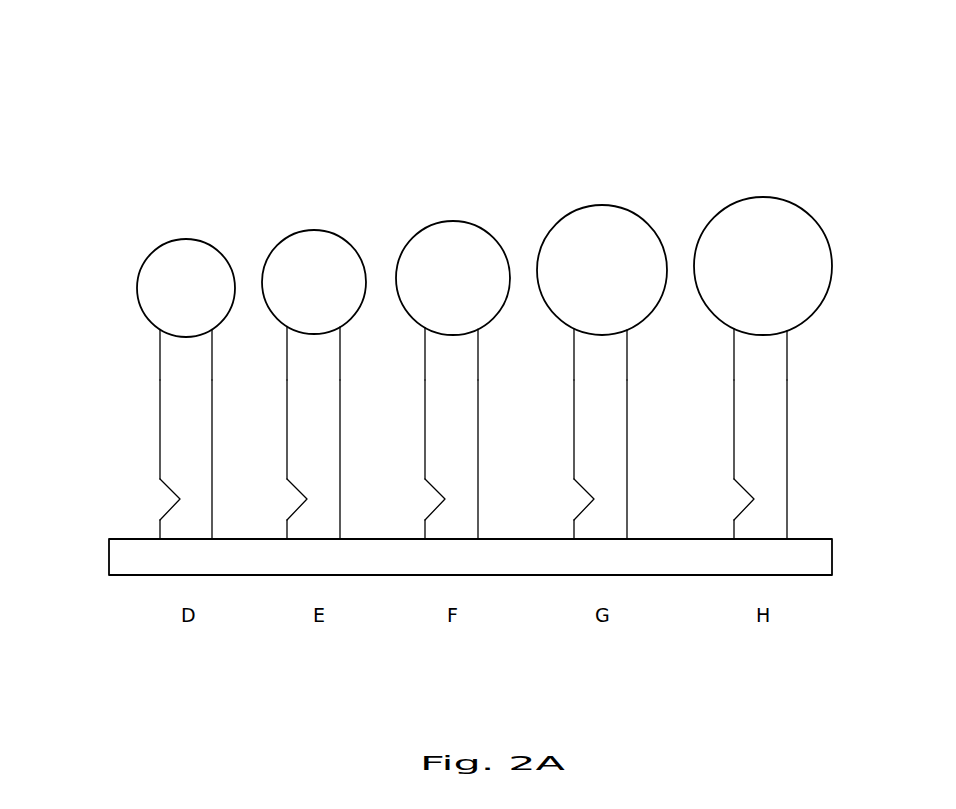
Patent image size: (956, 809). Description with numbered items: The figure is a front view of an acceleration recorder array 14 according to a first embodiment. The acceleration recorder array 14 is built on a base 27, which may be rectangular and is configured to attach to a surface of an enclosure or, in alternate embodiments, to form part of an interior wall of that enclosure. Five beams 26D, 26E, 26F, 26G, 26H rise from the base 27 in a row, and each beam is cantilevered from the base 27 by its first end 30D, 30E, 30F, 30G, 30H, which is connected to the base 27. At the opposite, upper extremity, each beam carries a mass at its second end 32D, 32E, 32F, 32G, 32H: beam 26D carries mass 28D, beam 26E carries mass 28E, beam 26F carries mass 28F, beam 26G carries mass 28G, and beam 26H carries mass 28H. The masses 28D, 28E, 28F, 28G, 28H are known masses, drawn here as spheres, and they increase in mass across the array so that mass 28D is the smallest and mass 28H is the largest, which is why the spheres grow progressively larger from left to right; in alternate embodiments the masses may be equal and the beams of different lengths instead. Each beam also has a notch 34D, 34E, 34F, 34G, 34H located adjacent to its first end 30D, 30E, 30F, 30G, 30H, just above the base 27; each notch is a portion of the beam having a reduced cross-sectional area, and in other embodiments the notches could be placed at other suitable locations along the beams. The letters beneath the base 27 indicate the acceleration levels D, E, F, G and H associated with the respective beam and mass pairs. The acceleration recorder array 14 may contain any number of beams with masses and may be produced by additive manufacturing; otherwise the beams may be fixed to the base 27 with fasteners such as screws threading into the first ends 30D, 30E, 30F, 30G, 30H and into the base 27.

The acceleration recorder array 14 is at (187, 93).
The base 27 is at (145, 556).
The mass 28D is at (165, 278).
The mass 28E is at (308, 258).
The mass 28F is at (452, 246).
The mass 28G is at (597, 237).
The mass 28H is at (765, 236).
The second end 32D is at (161, 348).
The second end 32E is at (313, 348).
The second end 32F is at (456, 348).
The second end 32G is at (596, 348).
The second end 32H is at (751, 348).
The beam 26D is at (159, 409).
The beam 26E is at (311, 409).
The beam 26F is at (454, 409).
The beam 26G is at (594, 409).
The beam 26H is at (749, 409).
The notch 34D is at (160, 492).
The notch 34E is at (287, 484).
The notch 34F is at (425, 484).
The notch 34G is at (574, 484).
The notch 34H is at (734, 484).
The first end 30D is at (190, 528).
The first end 30E is at (318, 528).
The first end 30F is at (456, 528).
The first end 30G is at (605, 528).
The first end 30H is at (765, 528).